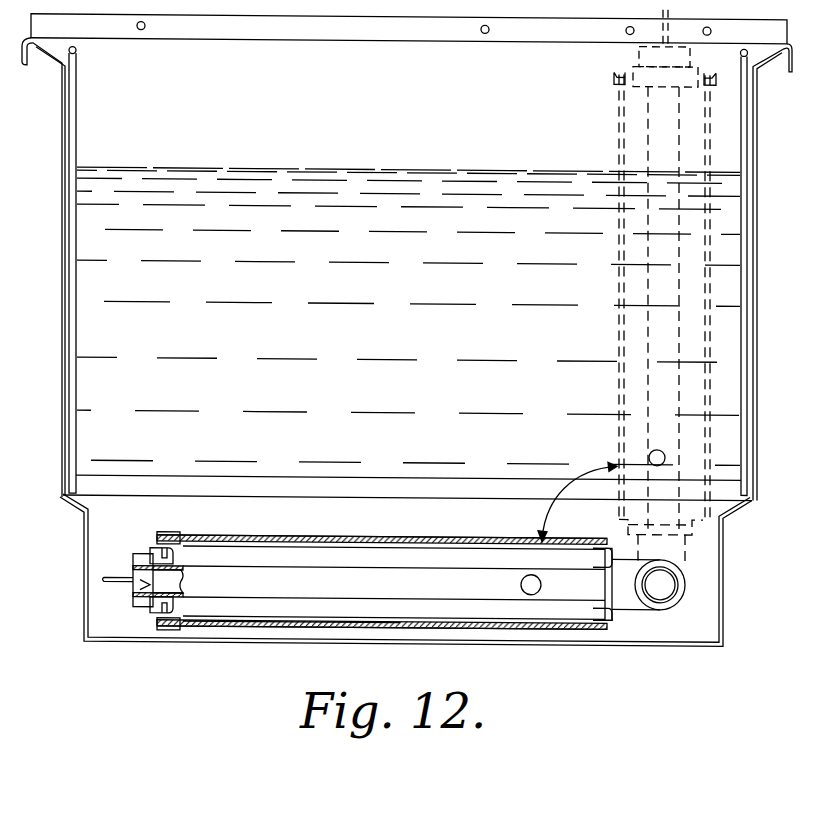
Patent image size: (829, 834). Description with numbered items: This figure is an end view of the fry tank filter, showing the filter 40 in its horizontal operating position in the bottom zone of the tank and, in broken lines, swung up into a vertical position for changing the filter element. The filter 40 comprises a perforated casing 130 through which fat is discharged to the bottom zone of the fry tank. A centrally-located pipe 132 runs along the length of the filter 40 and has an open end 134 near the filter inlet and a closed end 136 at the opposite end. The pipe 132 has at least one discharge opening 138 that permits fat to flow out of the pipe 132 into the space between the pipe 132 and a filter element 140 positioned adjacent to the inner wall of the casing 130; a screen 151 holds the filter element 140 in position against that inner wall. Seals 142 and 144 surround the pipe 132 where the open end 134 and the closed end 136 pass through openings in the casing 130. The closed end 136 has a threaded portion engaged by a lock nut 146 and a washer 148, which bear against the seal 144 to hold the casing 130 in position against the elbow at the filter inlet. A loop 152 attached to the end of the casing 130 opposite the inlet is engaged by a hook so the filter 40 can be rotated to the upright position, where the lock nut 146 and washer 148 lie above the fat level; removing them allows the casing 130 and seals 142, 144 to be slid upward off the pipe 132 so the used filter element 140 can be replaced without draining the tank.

The filter 40 is at (260, 533).
The casing 130 is at (619, 112).
The pipe 132 is at (648, 131).
The open end 134 is at (606, 588).
The closed end 136 is at (143, 587).
The discharge opening 138 is at (523, 575).
The filter element 140 is at (383, 617).
The seal 142 is at (597, 553).
The seal 144 is at (173, 562).
The lock nut 146 is at (136, 602).
The washer 148 is at (152, 550).
The screen 151 is at (303, 618).
The loop 152 is at (124, 577).